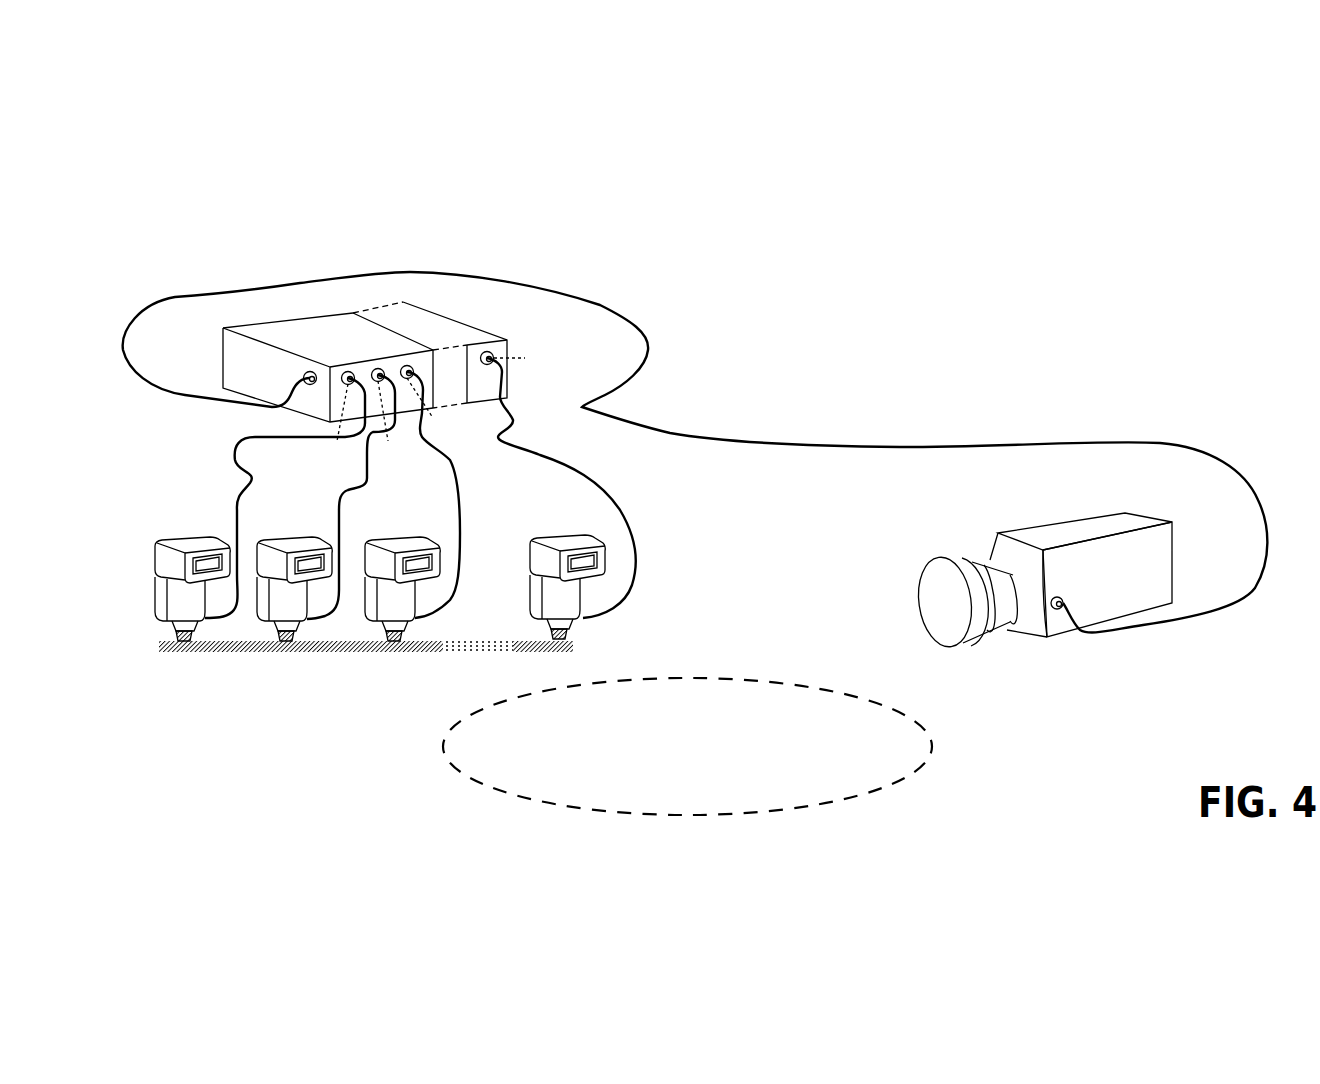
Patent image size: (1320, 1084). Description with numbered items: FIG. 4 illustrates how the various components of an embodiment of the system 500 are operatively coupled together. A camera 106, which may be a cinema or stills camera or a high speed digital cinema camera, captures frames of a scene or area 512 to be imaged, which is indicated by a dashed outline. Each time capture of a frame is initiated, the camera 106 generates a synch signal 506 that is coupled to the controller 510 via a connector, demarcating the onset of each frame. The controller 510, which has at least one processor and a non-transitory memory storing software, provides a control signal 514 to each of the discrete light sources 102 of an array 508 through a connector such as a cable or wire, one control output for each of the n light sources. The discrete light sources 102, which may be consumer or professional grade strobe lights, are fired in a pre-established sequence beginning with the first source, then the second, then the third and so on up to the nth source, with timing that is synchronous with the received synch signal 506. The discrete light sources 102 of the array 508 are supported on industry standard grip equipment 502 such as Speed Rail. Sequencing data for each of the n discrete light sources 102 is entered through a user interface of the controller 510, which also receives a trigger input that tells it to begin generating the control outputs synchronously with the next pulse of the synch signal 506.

The lighting system 500 is at (1065, 245).
The controller 510 is at (438, 305).
The array 508 is at (203, 486).
The control signal 514 is at (645, 550).
The synch signal 506 is at (760, 438).
The discrete light sources 102 is at (268, 614).
The grip equipment 502 is at (368, 652).
The camera 106 is at (1072, 521).
The scene or area 512 is at (700, 670).